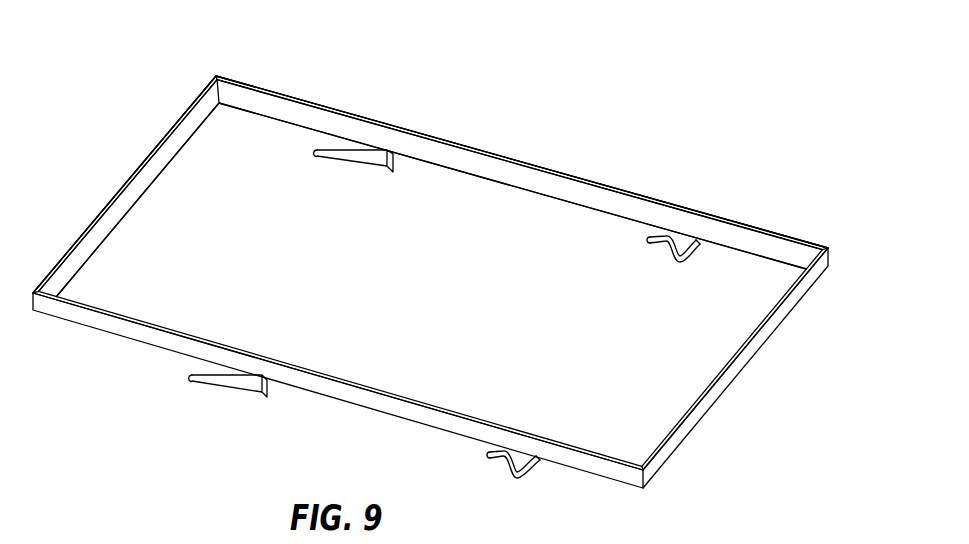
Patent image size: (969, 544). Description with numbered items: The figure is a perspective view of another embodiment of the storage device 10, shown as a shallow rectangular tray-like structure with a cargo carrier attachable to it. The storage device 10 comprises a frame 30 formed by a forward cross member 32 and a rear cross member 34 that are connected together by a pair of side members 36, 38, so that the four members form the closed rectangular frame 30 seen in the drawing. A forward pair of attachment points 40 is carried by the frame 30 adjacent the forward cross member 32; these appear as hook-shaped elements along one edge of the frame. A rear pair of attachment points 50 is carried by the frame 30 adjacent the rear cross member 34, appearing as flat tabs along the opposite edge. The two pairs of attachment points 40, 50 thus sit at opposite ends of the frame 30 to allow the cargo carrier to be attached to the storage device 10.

The storage device 10 is at (504, 89).
The frame 30 is at (828, 257).
The forward cross member 32 is at (748, 362).
The rear cross member 34 is at (133, 186).
The side member 36 is at (590, 197).
The side member 38 is at (360, 398).
The forward pair of attachment points 40 is at (683, 264).
The rear pair of attachment points 50 is at (334, 159).